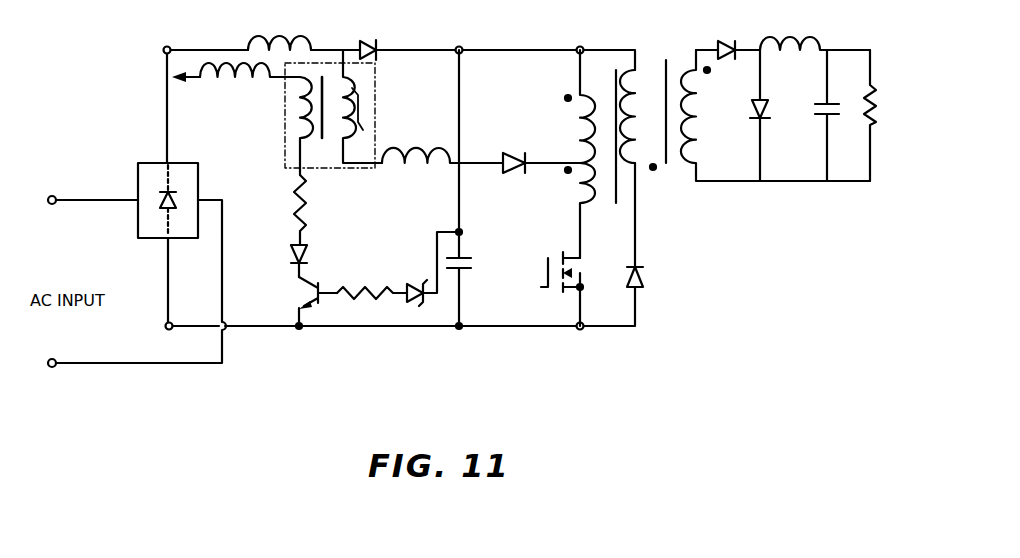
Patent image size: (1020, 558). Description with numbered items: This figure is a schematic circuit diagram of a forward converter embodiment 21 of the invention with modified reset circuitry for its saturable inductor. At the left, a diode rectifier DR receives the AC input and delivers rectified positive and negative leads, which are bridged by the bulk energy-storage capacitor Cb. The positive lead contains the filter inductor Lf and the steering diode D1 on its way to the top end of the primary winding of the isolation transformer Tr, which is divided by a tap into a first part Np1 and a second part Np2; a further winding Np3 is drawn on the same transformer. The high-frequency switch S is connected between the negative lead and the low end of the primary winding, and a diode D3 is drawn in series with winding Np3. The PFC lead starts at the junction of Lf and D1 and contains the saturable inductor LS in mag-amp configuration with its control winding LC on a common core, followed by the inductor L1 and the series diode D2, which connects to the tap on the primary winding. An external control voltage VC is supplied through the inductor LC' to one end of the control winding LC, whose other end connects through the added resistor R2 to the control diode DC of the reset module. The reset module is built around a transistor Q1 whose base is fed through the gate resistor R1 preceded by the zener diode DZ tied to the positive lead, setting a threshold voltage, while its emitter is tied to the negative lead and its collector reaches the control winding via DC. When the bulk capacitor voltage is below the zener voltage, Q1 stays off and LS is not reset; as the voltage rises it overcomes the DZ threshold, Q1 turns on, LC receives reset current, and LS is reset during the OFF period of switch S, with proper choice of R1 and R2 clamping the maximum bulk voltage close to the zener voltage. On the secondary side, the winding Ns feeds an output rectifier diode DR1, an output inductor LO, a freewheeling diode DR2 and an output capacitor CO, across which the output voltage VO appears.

The forward converter embodiment 21 is at (113, 98).
The diode rectifier DR is at (164, 190).
The external control voltage VC is at (165, 81).
The filter inductor Lf is at (279, 28).
The steering diode D1 is at (352, 32).
The inductor LC' is at (250, 87).
The control winding LC is at (284, 126).
The saturable inductor LS is at (373, 106).
The inductor L1 is at (442, 145).
The bulk capacitor Cb is at (471, 279).
The series diode D2 is at (534, 153).
The resistor R2 is at (312, 210).
The control diode DC is at (278, 255).
The transistor Q1 is at (305, 303).
The gate resistor R1 is at (368, 298).
The zener diode DZ is at (412, 300).
The first primary winding part Np1 is at (565, 106).
The second primary winding part Np2 is at (561, 210).
The primary winding 3 Np3 is at (648, 138).
The isolation transformer Tr is at (641, 115).
The high-frequency switch S is at (568, 289).
The diode D3 is at (650, 281).
The secondary winding Ns is at (775, 115).
The output rectifier diode DR1 is at (728, 37).
The output inductor LO is at (815, 30).
The output freewheeling diode DR2 is at (774, 115).
The output capacitor CO is at (818, 115).
The output voltage / load VO is at (881, 115).